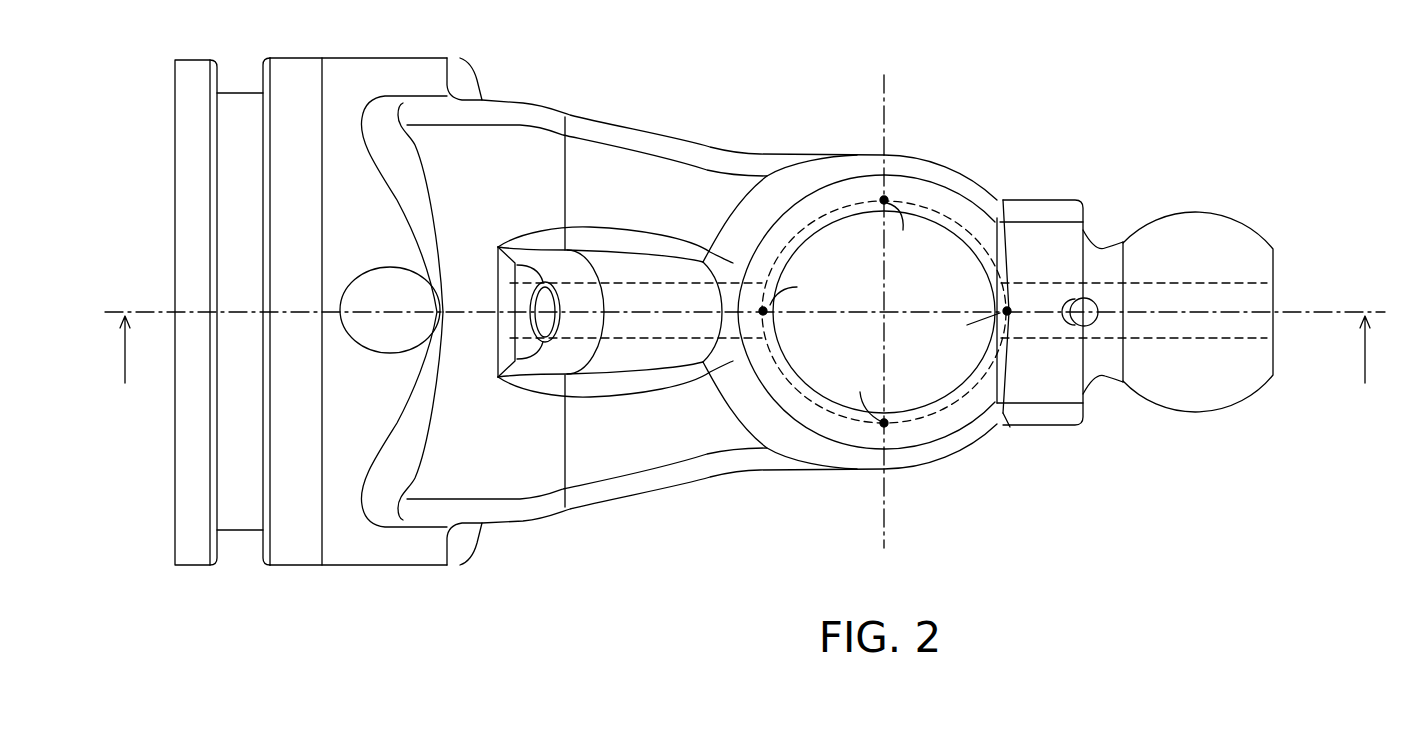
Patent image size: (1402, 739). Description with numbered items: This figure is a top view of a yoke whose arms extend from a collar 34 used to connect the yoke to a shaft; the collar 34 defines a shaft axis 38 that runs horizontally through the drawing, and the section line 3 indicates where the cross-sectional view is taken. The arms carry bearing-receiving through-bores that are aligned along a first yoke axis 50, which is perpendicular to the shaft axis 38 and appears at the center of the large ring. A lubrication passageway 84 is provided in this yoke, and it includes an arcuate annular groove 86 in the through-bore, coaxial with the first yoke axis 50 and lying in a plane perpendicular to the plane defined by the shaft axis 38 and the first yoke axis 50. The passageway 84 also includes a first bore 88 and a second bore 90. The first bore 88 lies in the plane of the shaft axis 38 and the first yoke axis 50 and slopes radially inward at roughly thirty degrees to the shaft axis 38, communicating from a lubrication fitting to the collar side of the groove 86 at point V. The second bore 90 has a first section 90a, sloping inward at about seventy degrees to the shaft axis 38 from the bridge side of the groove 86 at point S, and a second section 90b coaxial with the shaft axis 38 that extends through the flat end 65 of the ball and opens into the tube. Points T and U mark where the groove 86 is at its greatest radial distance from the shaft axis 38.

The section line 3- 3 is at (745, 366).
The collar 34 is at (195, 565).
The shaft axis 38 is at (1307, 310).
The first yoke axis 50 is at (890, 313).
The flat end 65 is at (1275, 260).
The lubrication passageway 84 is at (653, 318).
The annular groove 86 is at (858, 425).
The first bore 88 is at (612, 283).
The second bore 90 is at (1037, 285).
The first section 90a is at (1036, 325).
The second section 90b is at (1183, 325).